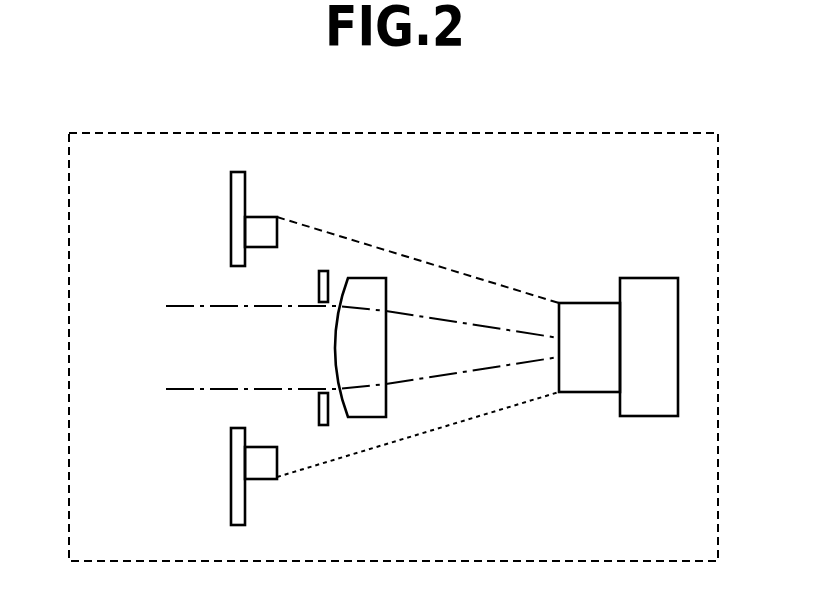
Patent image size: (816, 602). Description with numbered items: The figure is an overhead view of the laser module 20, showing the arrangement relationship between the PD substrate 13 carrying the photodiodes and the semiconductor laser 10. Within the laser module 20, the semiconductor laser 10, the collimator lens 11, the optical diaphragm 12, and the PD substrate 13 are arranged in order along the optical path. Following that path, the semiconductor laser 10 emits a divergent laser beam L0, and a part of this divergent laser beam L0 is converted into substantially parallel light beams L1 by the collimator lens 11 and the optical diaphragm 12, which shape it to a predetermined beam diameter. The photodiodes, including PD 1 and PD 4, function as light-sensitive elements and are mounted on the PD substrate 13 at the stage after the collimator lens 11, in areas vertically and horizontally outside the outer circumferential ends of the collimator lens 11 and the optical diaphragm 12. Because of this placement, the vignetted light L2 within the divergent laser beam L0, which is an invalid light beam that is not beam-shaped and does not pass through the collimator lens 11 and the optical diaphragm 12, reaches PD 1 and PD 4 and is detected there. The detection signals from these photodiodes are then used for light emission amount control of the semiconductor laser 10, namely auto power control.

The laser module 20 is at (610, 132).
The PD substrate 13 is at (247, 184).
The PD 1 is at (255, 234).
The optical diaphragm 12 is at (318, 286).
The collimator lens 11 is at (388, 400).
The semiconductor laser 10 is at (647, 276).
The PD 4 is at (255, 461).
The parallel light beams L1 is at (157, 300).
The vignetted light L2 is at (413, 257).
The divergent laser beam L0 is at (502, 272).